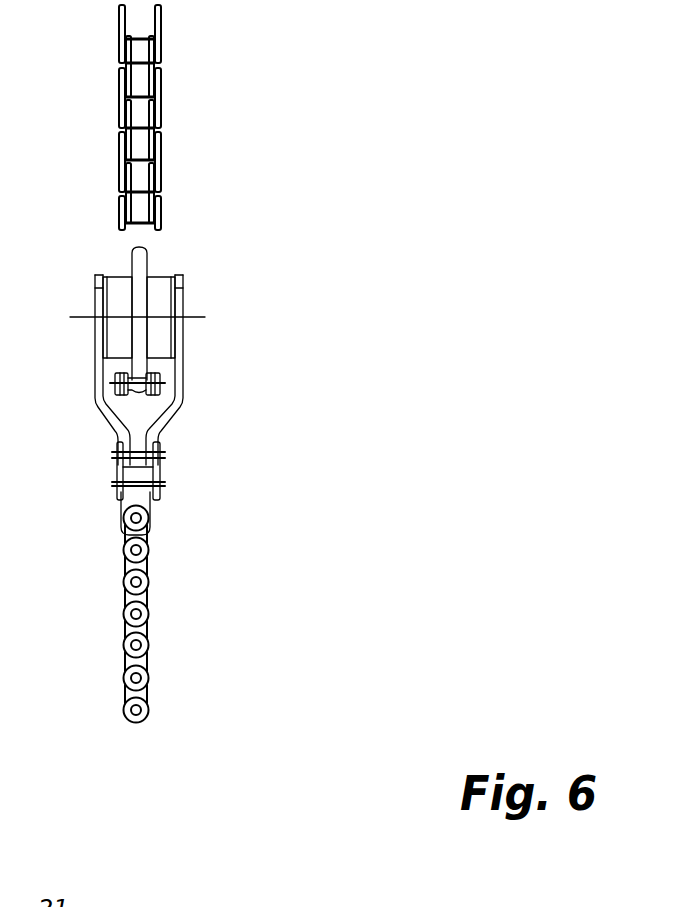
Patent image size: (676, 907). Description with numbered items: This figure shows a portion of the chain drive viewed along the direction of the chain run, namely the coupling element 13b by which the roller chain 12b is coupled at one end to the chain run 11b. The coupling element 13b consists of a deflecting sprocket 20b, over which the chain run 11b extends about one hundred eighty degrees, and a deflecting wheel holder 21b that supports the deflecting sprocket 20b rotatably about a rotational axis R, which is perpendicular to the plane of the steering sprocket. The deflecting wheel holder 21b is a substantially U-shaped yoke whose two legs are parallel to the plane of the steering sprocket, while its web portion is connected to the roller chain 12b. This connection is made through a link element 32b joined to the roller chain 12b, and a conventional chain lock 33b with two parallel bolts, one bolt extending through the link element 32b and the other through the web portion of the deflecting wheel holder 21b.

The chain run 11b is at (162, 93).
The roller chain 12b is at (147, 660).
The coupling element 13b is at (187, 304).
The deflecting sprocket 20b is at (137, 263).
The deflecting wheel holder 21b is at (180, 394).
The link element 32b is at (160, 503).
The coupling link 33b is at (158, 462).
The rotational axis R is at (190, 318).